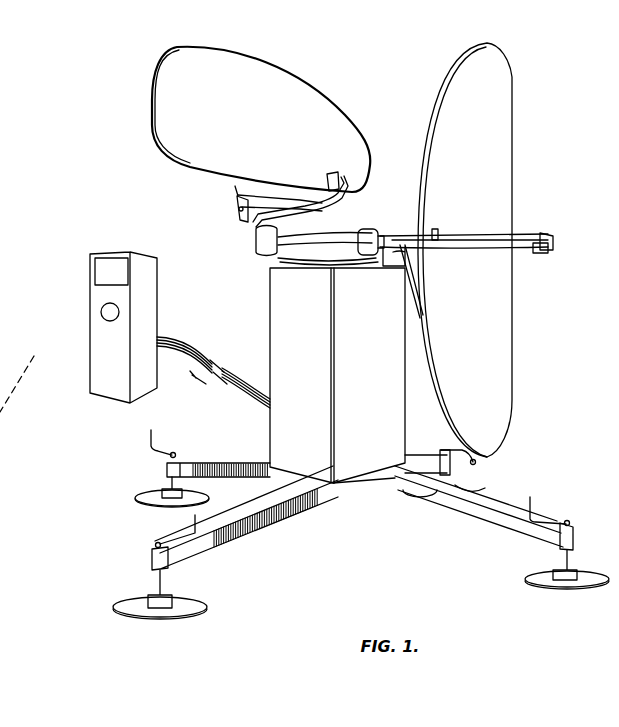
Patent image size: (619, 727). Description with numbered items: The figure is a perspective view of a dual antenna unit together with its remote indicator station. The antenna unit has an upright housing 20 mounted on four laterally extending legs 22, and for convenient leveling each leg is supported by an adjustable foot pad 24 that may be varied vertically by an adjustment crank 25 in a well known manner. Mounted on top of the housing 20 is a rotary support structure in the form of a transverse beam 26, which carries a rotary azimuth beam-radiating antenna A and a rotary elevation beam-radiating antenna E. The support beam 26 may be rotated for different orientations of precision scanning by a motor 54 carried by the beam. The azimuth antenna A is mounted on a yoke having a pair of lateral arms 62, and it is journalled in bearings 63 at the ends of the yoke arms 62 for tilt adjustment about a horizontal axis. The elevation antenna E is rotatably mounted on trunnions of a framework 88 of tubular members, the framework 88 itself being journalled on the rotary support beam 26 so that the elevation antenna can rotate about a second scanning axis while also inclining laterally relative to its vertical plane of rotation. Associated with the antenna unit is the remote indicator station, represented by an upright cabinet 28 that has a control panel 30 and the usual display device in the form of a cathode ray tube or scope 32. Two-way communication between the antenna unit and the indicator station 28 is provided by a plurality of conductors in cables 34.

The rotary azimuth beam-radiating antenna A is at (289, 64).
The rotary elevation beam-radiating antenna E is at (514, 83).
The upright housing 20 is at (337, 375).
The legs 22 is at (231, 463).
The adjustable foot pad 24 is at (138, 497).
The adjustment crank 25 is at (157, 435).
The transverse beam 26 is at (338, 241).
The upright cabinet 28 is at (150, 298).
The control panel 30 is at (100, 272).
The scope 32 is at (101, 313).
The cables 34 is at (230, 369).
The motor 54 is at (373, 229).
The lateral arms 62 is at (256, 221).
The bearings 63 is at (247, 206).
The framework 88 is at (419, 204).